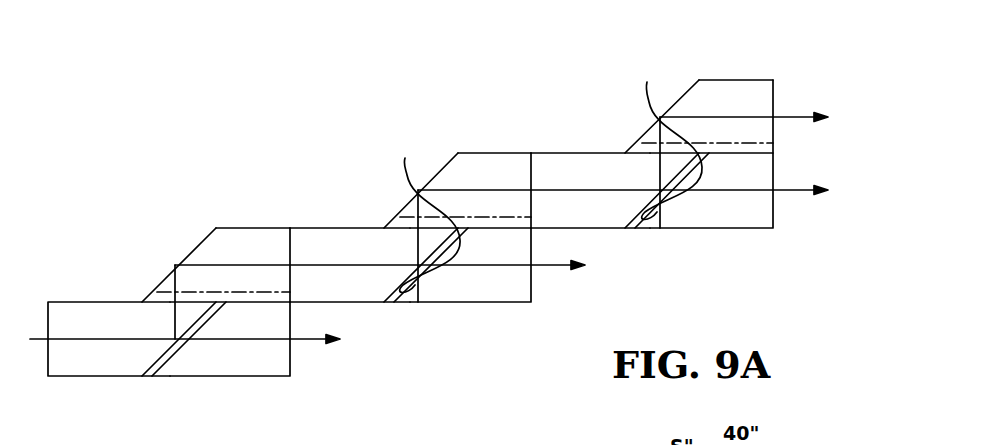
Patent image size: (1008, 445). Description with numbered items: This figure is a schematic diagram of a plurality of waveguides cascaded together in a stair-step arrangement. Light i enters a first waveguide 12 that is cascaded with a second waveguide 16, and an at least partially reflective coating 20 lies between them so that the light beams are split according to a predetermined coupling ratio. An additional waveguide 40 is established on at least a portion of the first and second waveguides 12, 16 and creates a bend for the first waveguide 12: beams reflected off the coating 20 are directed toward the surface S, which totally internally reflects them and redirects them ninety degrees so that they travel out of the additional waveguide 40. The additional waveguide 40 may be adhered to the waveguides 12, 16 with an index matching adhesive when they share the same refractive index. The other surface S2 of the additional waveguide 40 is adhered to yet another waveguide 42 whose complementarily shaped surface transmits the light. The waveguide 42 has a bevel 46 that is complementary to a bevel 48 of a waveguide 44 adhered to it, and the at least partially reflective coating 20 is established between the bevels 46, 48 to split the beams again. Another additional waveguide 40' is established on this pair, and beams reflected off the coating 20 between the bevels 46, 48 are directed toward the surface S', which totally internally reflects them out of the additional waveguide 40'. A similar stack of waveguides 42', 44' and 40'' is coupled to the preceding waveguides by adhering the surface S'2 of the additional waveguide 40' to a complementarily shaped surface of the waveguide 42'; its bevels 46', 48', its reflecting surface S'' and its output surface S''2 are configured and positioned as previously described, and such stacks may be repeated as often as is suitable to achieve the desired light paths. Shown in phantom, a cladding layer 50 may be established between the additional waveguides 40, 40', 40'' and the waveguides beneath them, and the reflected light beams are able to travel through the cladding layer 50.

The input light beam i is at (180, 338).
The first waveguide 12 is at (90, 361).
The second waveguide 16 is at (268, 359).
The at least partially reflective coating 20 is at (163, 376).
The additional waveguide 40 is at (232, 250).
The additional waveguide 40' is at (474, 194).
The additional waveguide 40'' is at (716, 120).
The waveguide 42 is at (350, 298).
The waveguide 42' is at (590, 223).
The waveguide 44 is at (499, 273).
The waveguide 44' is at (743, 198).
The bevel 46 is at (426, 213).
The bevel 46' is at (667, 138).
The bevel 48 is at (462, 304).
The bevel 48' is at (707, 230).
The cladding layer 50 is at (160, 283).
The surface S is at (179, 238).
The surface S' is at (421, 163).
The surface S'' is at (662, 87).
The other surface S2 is at (290, 247).
The surface S'2 is at (549, 160).
The surface S''2 is at (791, 85).